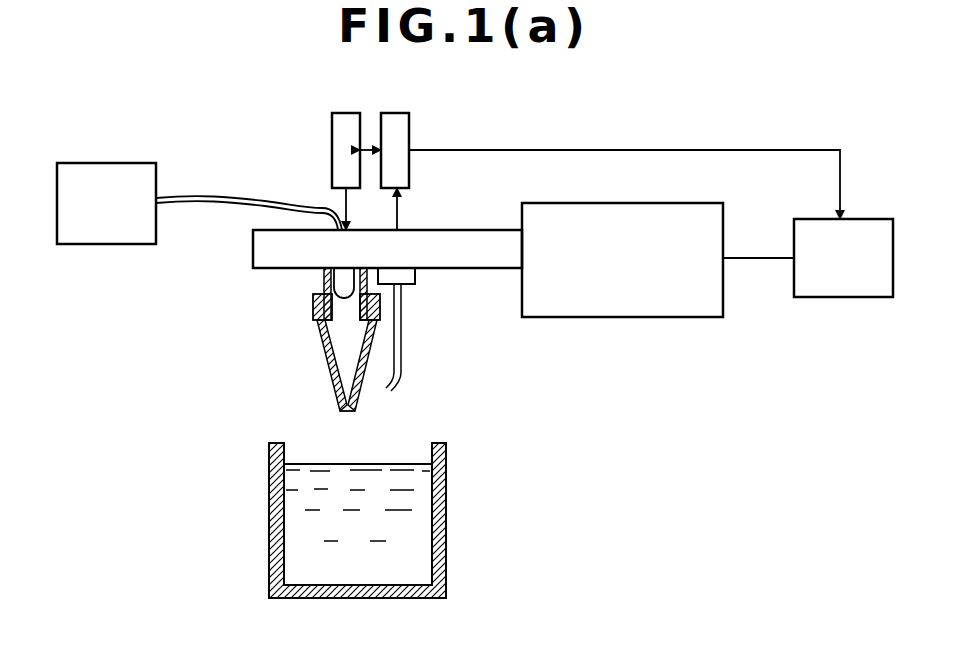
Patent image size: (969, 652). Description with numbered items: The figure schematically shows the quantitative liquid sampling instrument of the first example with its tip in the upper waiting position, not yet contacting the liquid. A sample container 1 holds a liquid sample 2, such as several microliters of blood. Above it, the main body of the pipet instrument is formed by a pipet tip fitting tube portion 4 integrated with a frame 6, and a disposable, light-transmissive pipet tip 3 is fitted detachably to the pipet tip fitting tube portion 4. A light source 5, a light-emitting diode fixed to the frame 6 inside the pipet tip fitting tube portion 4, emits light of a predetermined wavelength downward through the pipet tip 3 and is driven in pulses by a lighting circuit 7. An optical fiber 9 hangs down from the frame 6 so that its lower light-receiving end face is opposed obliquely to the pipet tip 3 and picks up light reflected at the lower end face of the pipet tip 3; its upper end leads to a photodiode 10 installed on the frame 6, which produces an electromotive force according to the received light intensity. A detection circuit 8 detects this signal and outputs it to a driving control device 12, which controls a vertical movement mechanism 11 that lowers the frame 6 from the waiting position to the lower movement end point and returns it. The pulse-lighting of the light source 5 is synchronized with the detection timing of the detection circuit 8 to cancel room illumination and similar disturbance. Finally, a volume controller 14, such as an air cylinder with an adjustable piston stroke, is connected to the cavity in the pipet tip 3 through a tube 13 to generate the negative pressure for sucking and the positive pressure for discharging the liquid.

The sample container 1 is at (438, 565).
The liquid sample 2 is at (415, 523).
The pipet tip 3 is at (330, 366).
The pipet tip fitting tube portion 4 is at (318, 292).
The light source 5 is at (340, 279).
The frame 6 is at (253, 253).
The lighting circuit 7 is at (332, 129).
The detection circuit 8 is at (409, 129).
The optical fiber 9 is at (400, 367).
The photodiode 10 is at (400, 280).
The vertical movement mechanism 11 is at (555, 203).
The driving control device 12 is at (820, 219).
The tube 13 is at (205, 190).
The volume controller 14 is at (134, 163).